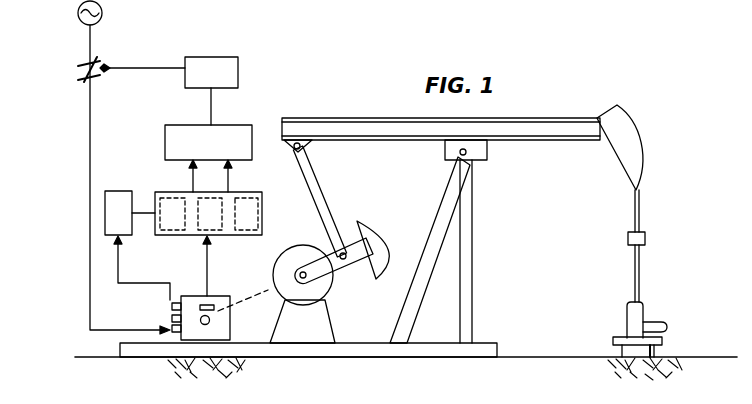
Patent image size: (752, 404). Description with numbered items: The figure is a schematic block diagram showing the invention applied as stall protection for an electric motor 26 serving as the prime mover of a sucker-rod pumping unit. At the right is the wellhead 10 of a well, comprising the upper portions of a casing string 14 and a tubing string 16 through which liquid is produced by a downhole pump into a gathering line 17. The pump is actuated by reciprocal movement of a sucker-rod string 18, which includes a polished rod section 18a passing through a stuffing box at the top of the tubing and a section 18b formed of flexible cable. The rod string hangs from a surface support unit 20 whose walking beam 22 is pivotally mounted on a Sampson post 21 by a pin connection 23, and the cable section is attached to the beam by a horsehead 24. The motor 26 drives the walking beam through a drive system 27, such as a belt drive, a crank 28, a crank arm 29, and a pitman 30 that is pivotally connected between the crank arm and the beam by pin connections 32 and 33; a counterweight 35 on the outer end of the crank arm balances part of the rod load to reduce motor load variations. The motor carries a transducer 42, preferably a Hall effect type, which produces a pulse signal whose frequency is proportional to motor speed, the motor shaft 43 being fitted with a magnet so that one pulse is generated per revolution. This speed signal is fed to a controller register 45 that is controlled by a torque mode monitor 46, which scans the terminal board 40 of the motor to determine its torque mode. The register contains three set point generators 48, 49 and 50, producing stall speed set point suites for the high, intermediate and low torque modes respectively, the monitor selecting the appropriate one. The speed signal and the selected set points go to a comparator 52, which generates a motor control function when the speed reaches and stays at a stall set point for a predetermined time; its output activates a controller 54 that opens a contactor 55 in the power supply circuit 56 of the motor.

The wellhead 10 is at (681, 343).
The casing string 14 is at (613, 346).
The tubing string 16 is at (627, 317).
The gathering line 17 is at (667, 327).
The sucker-rod string 18 is at (656, 246).
The polished rod section 18a is at (641, 283).
The flexible cable section 18b is at (641, 208).
The surface support unit 20 is at (494, 172).
The Sampson post 21 is at (473, 311).
The walking beam 22 is at (528, 143).
The pin connection 23 is at (453, 163).
The horsehead 24 is at (633, 150).
The electric motor 26 is at (230, 326).
The drive system 27 is at (262, 302).
The crank 28 is at (305, 246).
The crank arm 29 is at (338, 284).
The pitman 30 is at (318, 190).
The pin connection 32 is at (358, 269).
The pin connection 33 is at (295, 154).
The counterweight 35 is at (373, 236).
The terminal board 40 is at (172, 317).
The transducer 42 is at (205, 304).
The motor shaft 43 is at (203, 324).
The controller register 45 is at (173, 235).
The torque mode monitor 46 is at (105, 213).
The set point generator 48 is at (165, 195).
The set point generator 49 is at (200, 197).
The set point generator 50 is at (245, 227).
The comparator 52 is at (225, 125).
The controller 54 is at (232, 57).
The contactor 55 is at (101, 62).
The power supply circuit 56 is at (90, 150).